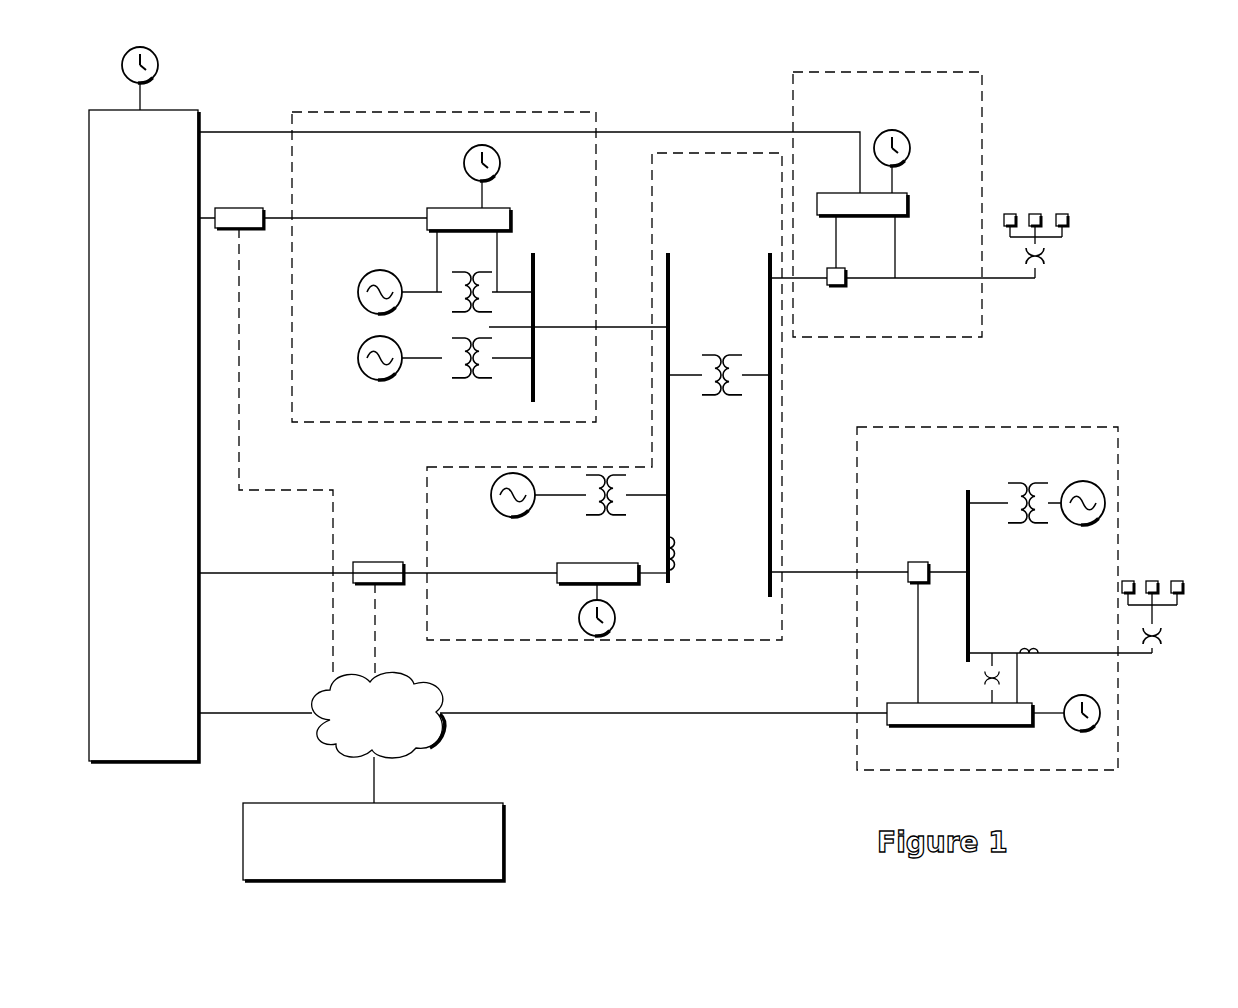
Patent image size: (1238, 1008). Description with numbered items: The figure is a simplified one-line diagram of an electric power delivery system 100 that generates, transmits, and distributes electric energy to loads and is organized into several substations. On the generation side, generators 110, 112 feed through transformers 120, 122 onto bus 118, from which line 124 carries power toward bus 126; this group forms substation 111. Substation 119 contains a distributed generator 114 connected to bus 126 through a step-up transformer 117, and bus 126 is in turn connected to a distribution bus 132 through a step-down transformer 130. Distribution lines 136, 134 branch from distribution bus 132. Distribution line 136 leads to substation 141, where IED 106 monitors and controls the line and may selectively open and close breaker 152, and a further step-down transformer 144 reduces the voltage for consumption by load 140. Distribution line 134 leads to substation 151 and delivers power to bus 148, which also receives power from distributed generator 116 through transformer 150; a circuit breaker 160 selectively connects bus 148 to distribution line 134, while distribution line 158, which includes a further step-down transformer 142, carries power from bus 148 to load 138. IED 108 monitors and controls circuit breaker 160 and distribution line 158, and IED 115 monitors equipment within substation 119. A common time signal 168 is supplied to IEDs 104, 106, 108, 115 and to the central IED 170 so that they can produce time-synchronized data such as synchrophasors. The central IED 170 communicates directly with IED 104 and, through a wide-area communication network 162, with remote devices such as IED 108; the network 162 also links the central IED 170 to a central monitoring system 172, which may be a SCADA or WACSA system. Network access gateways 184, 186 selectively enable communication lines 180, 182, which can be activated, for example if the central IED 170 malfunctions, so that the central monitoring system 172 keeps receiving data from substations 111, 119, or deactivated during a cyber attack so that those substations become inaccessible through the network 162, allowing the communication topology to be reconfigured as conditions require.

The electric power delivery system 100 is at (1100, 126).
The IED 104 is at (448, 208).
The IED 106 is at (834, 193).
The IED 108 is at (1005, 726).
The generator 110 is at (358, 292).
The substation 111 is at (385, 423).
The generator 112 is at (358, 358).
The generator 114 is at (492, 496).
The IED 115 is at (620, 563).
The distributed generator 116 is at (1070, 523).
The step-up transformer 117 is at (584, 511).
The bus 118 is at (536, 383).
The substation 119 is at (546, 641).
The transformer 120 is at (450, 305).
The transformer 122 is at (472, 380).
The line 124 is at (614, 330).
The bus 126 is at (671, 425).
The step-down transformer 130 is at (722, 353).
The distribution bus 132 is at (768, 560).
The distribution line 134 is at (868, 574).
The distribution line 136 is at (810, 280).
The load 138 is at (1150, 580).
The load 140 is at (1072, 218).
The substation 141 is at (960, 338).
The step-down transformer 142 is at (1162, 640).
The step-down transformer 144 is at (1046, 260).
The bus 148 is at (965, 492).
The transformer 150 is at (1030, 482).
The substation 151 is at (1055, 771).
The breaker 152 is at (850, 289).
The distribution line 158 is at (1042, 651).
The circuit breaker 160 is at (915, 562).
The communication network 162 is at (378, 715).
The common time signal 168 is at (158, 68).
The central IED 170 is at (144, 436).
The central monitoring system 172 is at (373, 819).
The communication line 180 is at (373, 610).
The communication line 182 is at (283, 491).
The network access gateway 184 is at (373, 562).
The network access gateway 186 is at (236, 208).